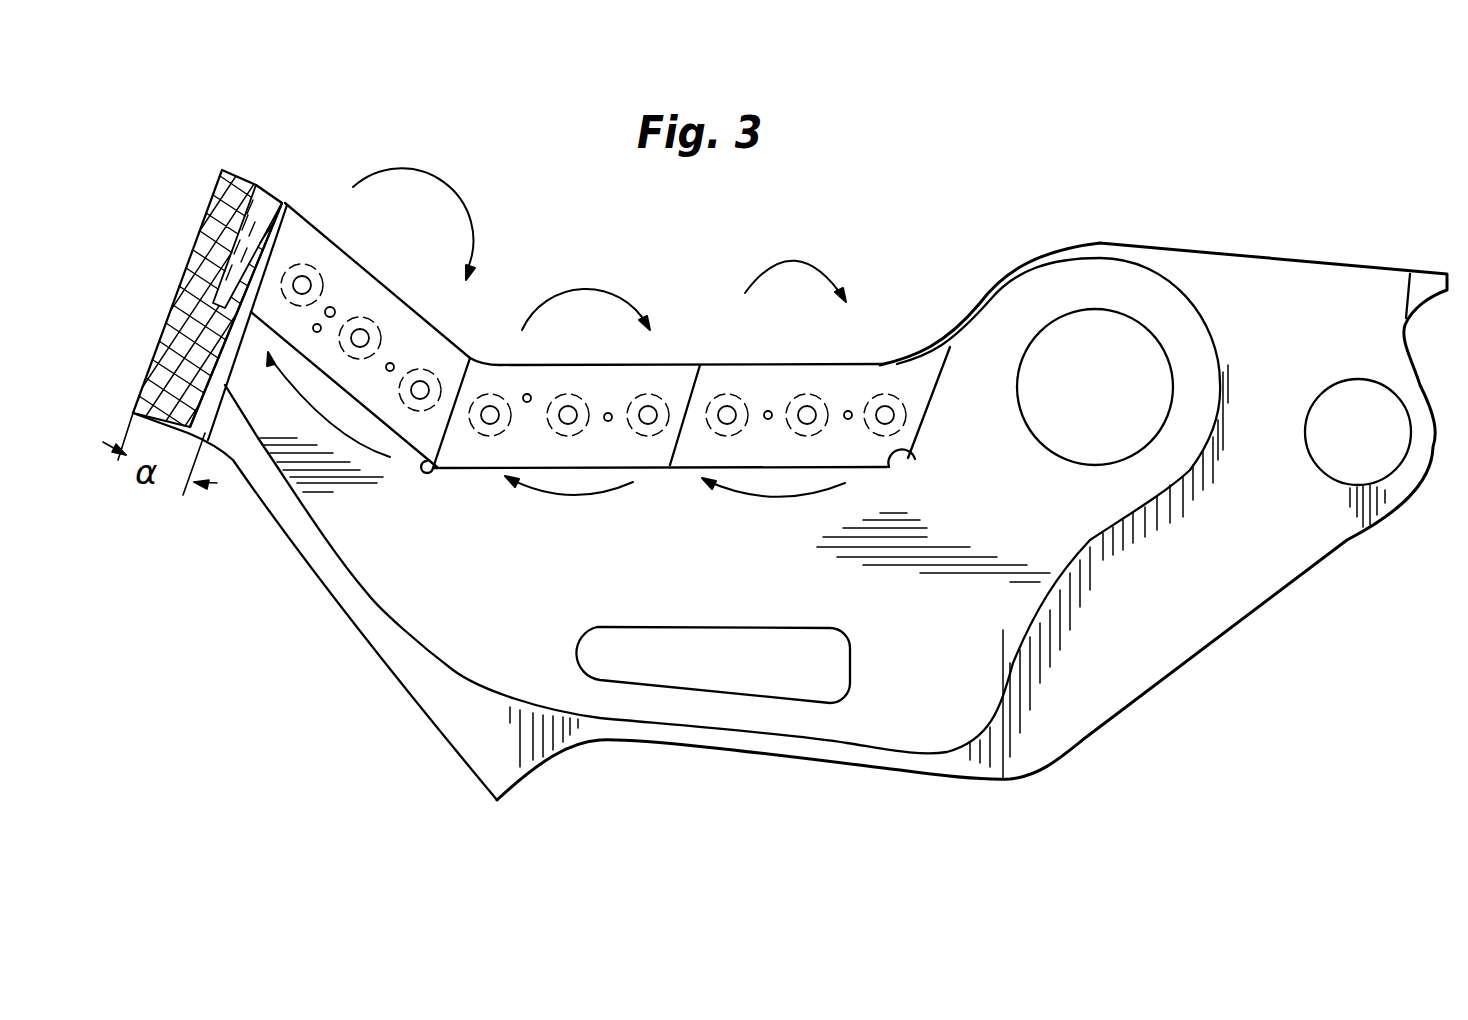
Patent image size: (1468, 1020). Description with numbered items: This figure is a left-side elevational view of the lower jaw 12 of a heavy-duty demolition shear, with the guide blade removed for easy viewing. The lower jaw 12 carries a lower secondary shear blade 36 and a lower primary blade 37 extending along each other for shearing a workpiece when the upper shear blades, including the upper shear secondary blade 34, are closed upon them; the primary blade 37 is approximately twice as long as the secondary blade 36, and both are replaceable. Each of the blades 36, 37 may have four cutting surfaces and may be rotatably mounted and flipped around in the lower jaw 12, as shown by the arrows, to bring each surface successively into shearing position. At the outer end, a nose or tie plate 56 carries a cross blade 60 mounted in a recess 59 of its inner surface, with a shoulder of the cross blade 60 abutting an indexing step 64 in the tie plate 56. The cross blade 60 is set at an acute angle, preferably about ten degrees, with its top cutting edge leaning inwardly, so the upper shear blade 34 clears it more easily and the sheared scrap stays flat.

The lower jaw 12 is at (1136, 232).
The upper shear secondary blade 34 is at (458, 485).
The lower secondary shear blade 36 is at (683, 373).
The lower primary shear blade 37 is at (352, 262).
The tie plate 56 is at (210, 178).
The recess 59 is at (273, 203).
The cross blade 60 is at (280, 208).
The indexing step 64 is at (257, 218).